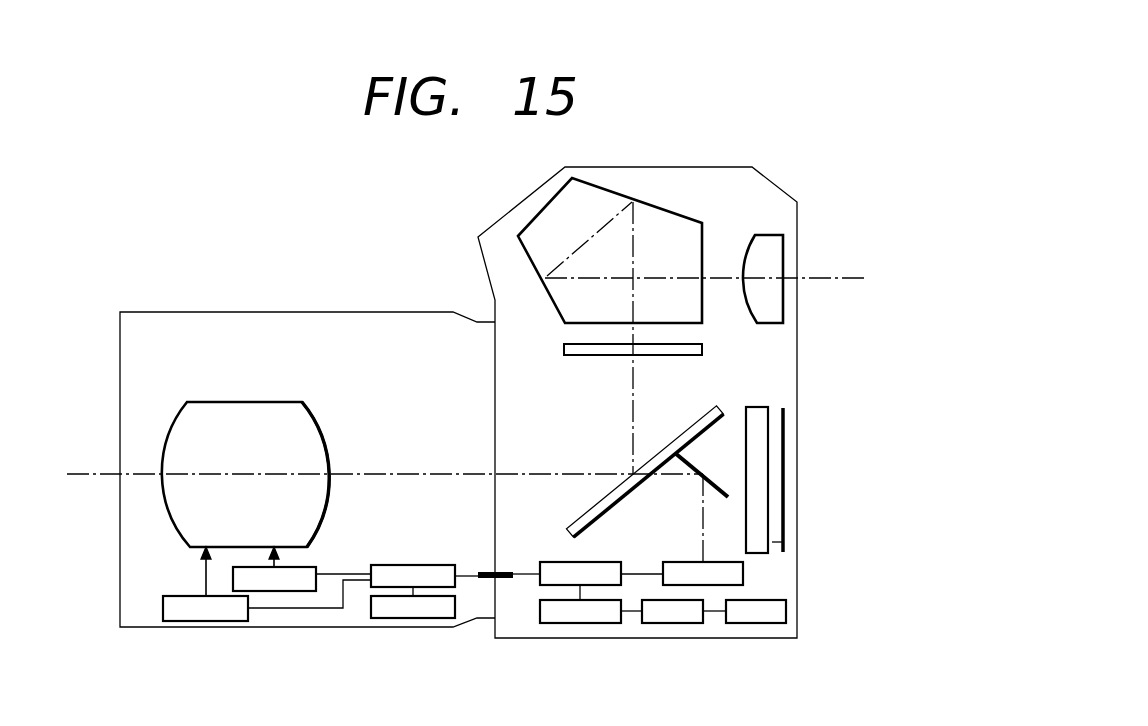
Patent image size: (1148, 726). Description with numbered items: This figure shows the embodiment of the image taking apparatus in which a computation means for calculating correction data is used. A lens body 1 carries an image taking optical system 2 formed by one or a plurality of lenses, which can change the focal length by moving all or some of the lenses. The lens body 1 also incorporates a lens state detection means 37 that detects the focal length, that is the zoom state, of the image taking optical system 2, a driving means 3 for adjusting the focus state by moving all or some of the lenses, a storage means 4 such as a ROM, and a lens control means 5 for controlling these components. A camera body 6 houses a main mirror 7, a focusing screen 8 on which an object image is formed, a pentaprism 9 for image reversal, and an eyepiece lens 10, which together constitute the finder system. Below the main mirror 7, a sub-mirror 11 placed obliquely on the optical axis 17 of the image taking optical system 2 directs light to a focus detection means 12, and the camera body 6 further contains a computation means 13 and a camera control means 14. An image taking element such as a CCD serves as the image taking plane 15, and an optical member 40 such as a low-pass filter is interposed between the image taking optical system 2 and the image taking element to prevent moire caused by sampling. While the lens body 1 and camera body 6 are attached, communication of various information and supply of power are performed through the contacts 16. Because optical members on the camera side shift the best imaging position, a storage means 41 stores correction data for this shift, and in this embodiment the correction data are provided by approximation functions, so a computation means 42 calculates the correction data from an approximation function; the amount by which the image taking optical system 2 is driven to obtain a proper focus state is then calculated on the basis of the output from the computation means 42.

The lens body 1 is at (197, 318).
The image taking optical system 2 is at (283, 403).
The driving means 3 is at (190, 612).
The storage means 4 is at (427, 615).
The lens control means 5 is at (385, 565).
The camera body 6 is at (703, 170).
The main mirror 7 is at (717, 405).
The focusing screen 8 is at (702, 348).
The pentaprism 9 is at (677, 227).
The eyepiece lens 10 is at (775, 253).
The sub-mirror 11 is at (723, 482).
The focus detection means 12 is at (690, 562).
The computation means 13 is at (602, 617).
The camera control means 14 is at (553, 562).
The image taking plane 15 is at (785, 427).
The contacts 16 is at (493, 566).
The optical axis 17 is at (83, 475).
The lens state detection means 37 is at (292, 582).
The optical member 40 is at (783, 542).
The storage means 41 is at (768, 617).
The computation means 42 is at (683, 617).